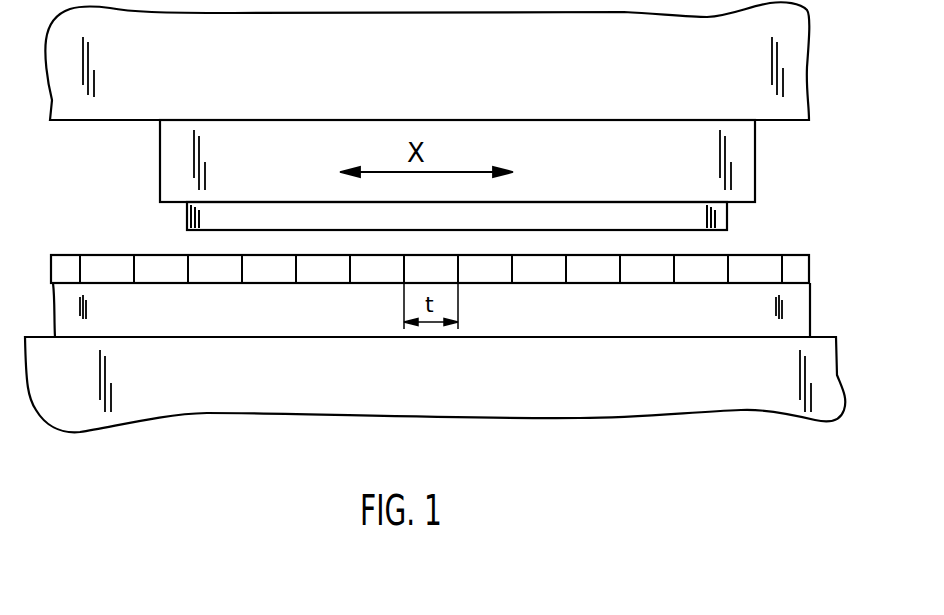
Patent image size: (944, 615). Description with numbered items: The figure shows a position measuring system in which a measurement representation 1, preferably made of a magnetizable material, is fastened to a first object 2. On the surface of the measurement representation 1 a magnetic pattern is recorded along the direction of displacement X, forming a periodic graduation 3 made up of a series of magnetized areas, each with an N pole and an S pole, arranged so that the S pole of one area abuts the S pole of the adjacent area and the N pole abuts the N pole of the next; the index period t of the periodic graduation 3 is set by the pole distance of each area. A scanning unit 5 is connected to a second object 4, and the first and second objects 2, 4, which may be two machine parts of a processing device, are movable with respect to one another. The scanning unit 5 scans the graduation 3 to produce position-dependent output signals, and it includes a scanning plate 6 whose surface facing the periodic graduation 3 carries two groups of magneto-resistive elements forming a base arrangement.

The measurement representation 1 is at (806, 313).
The first object 2 is at (834, 377).
The periodic graduation 3 is at (807, 268).
The second object 4 is at (800, 52).
The scanning unit 5 is at (747, 165).
The scanning plate 6 is at (727, 213).